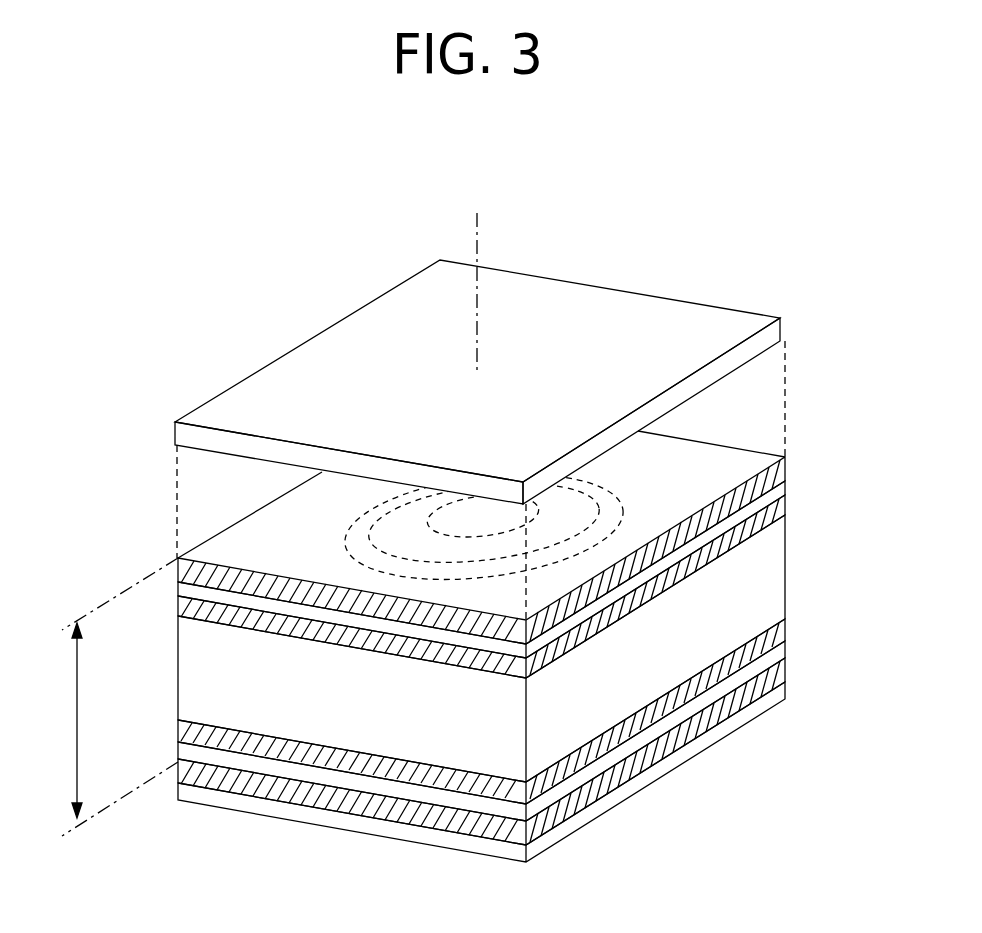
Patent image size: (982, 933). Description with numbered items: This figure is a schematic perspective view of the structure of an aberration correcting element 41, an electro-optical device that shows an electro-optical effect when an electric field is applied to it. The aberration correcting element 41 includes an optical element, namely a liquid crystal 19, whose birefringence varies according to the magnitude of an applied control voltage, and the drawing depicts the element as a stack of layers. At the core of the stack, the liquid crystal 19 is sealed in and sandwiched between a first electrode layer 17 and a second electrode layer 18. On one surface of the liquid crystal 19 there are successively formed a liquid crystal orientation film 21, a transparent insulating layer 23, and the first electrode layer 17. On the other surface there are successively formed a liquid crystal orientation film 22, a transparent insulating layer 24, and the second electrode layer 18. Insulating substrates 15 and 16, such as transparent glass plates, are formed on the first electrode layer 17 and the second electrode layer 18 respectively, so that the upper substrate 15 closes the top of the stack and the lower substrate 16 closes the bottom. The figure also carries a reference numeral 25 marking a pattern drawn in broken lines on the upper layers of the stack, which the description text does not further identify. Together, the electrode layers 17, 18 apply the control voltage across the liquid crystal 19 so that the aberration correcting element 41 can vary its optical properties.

The insulating substrate 15 is at (722, 318).
The insulating substrate 16 is at (786, 692).
The first electrode layer 17 is at (785, 467).
The second electrode layer 18 is at (786, 670).
The liquid crystal 19 is at (780, 566).
The liquid crystal orientation film 21 is at (785, 504).
The liquid crystal orientation film 22 is at (786, 627).
The transparent insulating layer 23 is at (785, 487).
The transparent insulating layer 24 is at (786, 650).
The concentric electrode pattern 25 is at (640, 468).
The aberration correcting element 41 is at (192, 314).